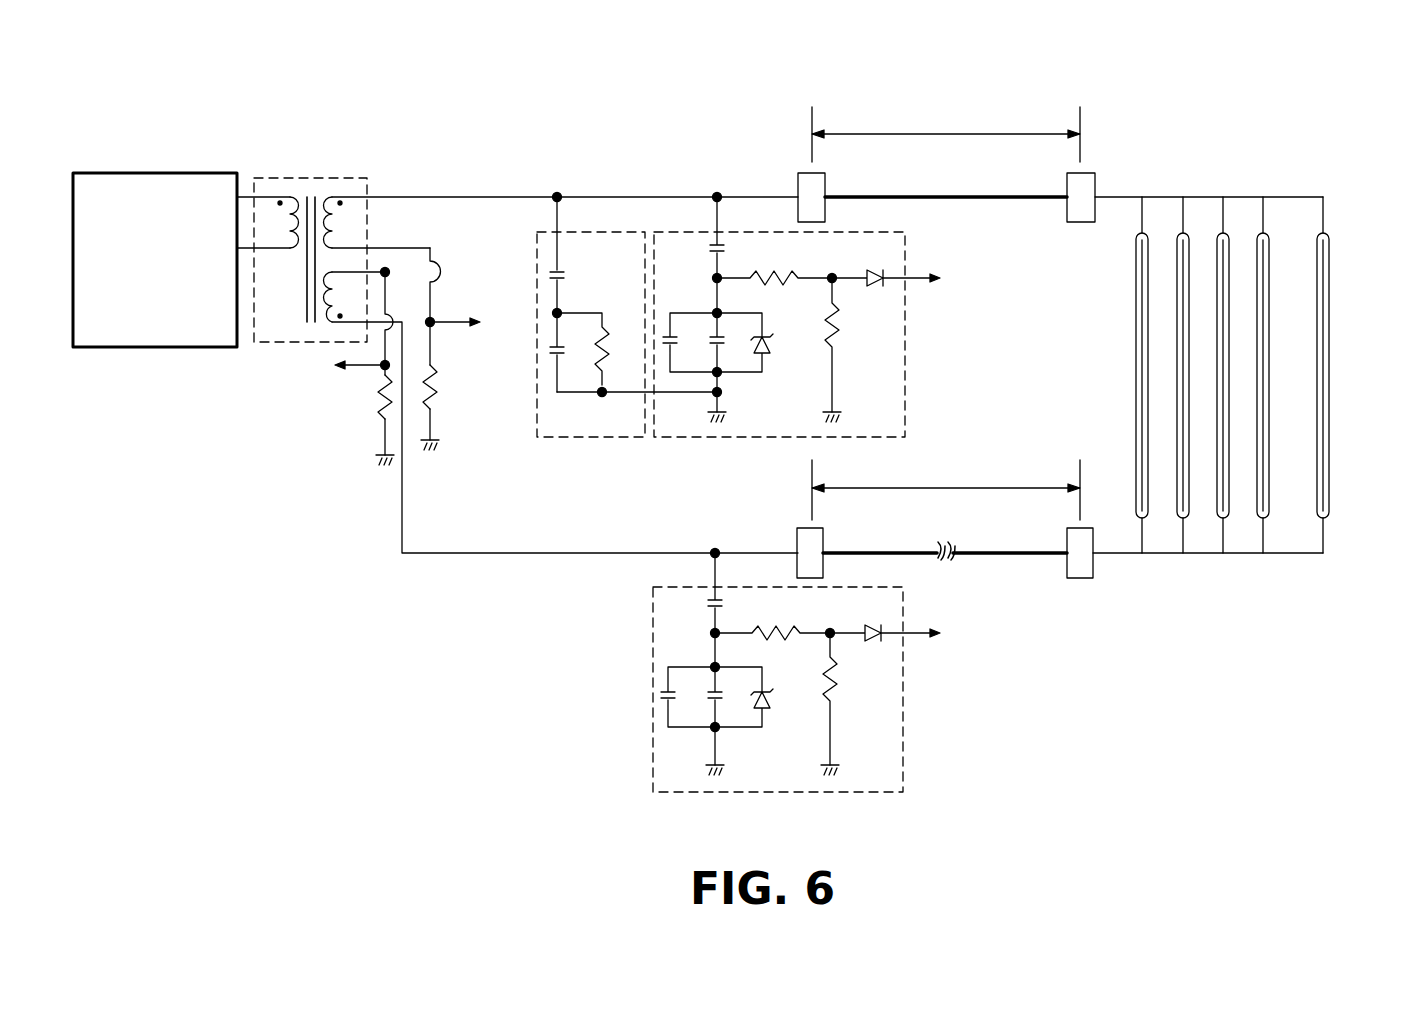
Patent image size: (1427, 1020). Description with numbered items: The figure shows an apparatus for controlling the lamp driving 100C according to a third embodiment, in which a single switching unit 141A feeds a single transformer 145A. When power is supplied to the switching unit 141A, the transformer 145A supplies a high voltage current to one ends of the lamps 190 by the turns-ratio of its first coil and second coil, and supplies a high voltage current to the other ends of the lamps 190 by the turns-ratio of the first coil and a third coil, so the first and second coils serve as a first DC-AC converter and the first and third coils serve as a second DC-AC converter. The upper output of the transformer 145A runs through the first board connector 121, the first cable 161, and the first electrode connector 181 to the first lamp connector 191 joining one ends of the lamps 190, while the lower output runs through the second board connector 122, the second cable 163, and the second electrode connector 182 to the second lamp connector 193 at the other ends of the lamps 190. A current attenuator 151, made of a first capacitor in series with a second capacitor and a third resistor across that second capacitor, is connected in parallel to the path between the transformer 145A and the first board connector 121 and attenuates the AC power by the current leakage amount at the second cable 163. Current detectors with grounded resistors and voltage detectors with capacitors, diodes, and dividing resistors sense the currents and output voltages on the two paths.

The apparatus for controlling the lamp driving 100C is at (160, 48).
The switching unit 141A is at (135, 173).
The transformer 145A is at (305, 178).
The current attenuator 151 is at (596, 232).
The first board connector 121 is at (808, 173).
The second board connector 122 is at (807, 528).
The first electrode connector 181 is at (1082, 173).
The second electrode connector 182 is at (1088, 580).
The first cable 161 is at (1022, 200).
The second cable 163 is at (1003, 556).
The lamps 190 is at (1253, 380).
The first lamp connector 191 is at (1246, 197).
The second lamp connector 193 is at (1283, 556).